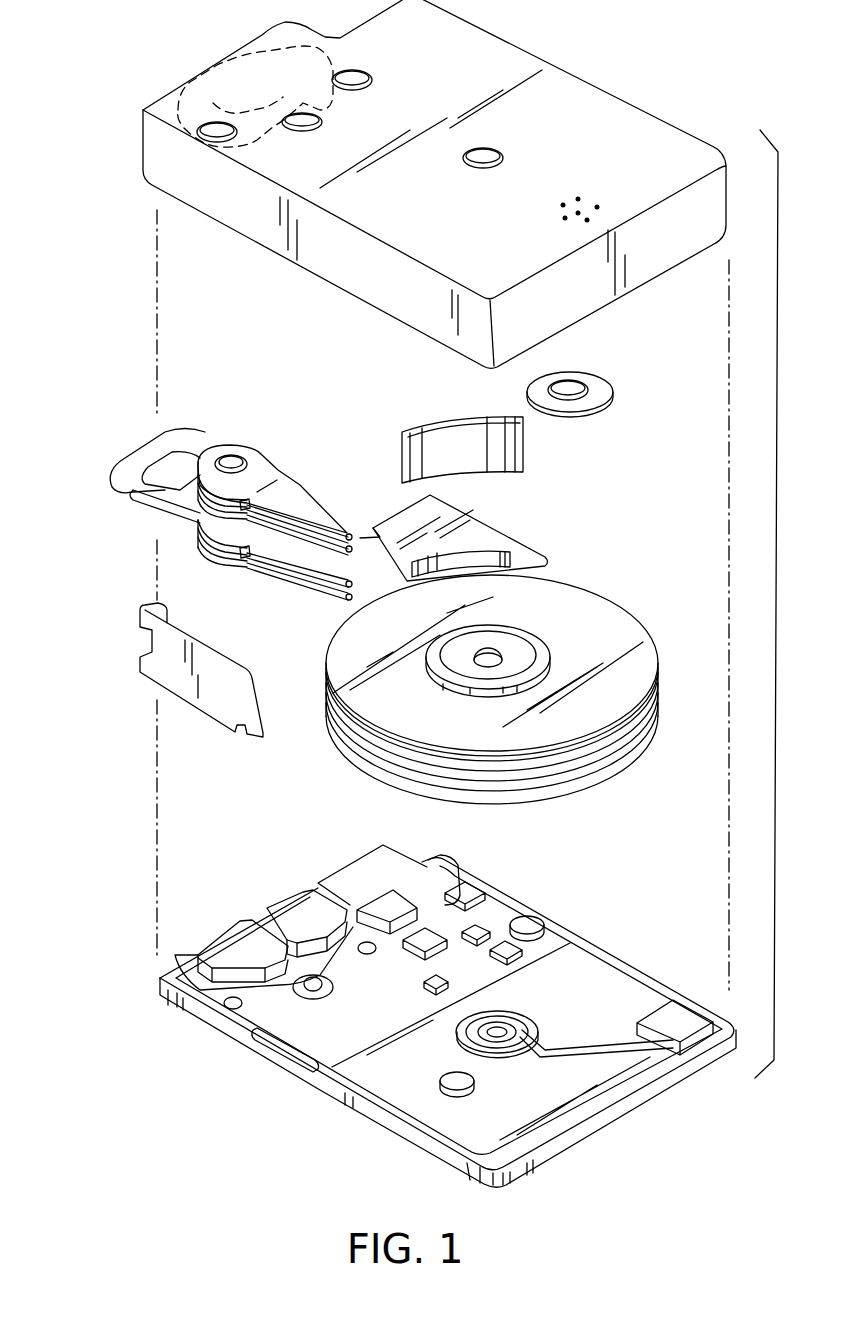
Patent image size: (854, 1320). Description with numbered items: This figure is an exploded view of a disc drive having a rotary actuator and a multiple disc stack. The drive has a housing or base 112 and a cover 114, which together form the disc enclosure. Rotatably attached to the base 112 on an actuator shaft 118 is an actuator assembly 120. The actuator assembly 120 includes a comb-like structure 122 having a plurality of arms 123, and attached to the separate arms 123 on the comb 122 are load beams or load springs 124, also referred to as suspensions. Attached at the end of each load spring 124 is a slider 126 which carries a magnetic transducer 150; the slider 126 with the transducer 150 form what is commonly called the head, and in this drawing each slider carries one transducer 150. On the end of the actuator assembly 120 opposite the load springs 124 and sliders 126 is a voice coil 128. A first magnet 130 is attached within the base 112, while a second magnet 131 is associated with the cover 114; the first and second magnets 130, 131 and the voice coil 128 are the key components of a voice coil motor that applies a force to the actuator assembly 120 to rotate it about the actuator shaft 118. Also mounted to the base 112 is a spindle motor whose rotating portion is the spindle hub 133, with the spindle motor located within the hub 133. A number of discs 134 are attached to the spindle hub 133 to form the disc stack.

The base 112 is at (622, 985).
The cover 114 is at (605, 115).
The actuator shaft 118 is at (231, 458).
The actuator assembly 120 is at (180, 510).
The comb-like structure 122 is at (257, 573).
The arms 123 is at (283, 474).
The load springs 124 is at (303, 503).
The slider 126 is at (348, 535).
The voice coil 128 is at (133, 462).
The first magnet 130 is at (257, 57).
The second magnet 131 is at (225, 945).
The spindle hub 133 is at (497, 643).
The discs 134 is at (620, 630).
The magnetic transducer 150 is at (358, 540).